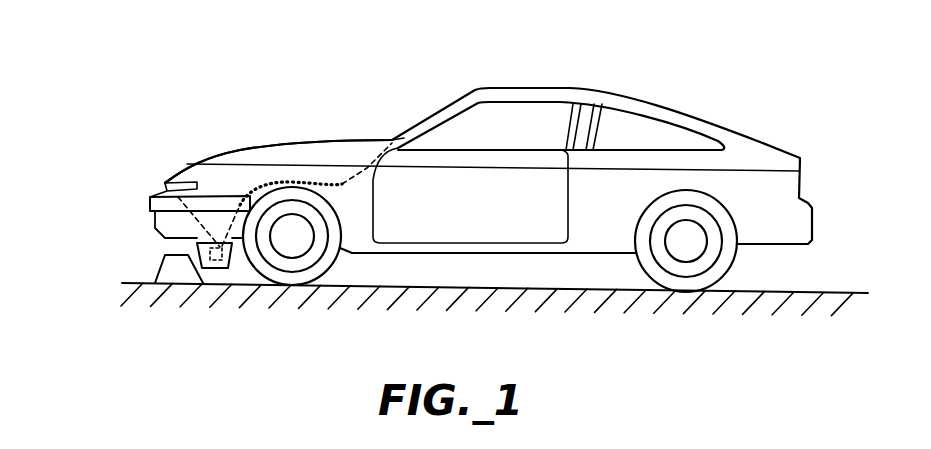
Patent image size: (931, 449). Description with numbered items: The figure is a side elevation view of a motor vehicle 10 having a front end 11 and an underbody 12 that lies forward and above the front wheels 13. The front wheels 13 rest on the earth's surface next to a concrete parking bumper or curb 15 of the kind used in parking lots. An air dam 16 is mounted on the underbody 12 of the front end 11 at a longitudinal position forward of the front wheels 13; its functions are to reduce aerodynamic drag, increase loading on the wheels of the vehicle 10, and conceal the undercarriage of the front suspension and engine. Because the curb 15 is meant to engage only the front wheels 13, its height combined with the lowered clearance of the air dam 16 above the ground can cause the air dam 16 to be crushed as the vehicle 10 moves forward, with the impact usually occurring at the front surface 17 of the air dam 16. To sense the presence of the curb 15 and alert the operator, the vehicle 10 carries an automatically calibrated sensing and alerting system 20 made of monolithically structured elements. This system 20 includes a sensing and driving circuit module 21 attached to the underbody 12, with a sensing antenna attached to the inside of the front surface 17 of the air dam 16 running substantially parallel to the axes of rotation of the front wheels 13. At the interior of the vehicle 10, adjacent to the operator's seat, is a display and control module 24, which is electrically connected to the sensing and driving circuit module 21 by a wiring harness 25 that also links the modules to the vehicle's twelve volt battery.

The motor vehicle 10 is at (357, 71).
The front end 11 is at (240, 147).
The underbody 12 is at (172, 236).
The front wheels 13 is at (353, 269).
The concrete parking bumper or curb 15 is at (155, 268).
The air dam 16 is at (225, 282).
The front surface 17 is at (197, 250).
The sensing and alerting system 20 is at (392, 123).
The sensing and driving circuit module 21 is at (166, 186).
The display and control module 24 is at (400, 130).
The wiring harness 25 is at (342, 183).